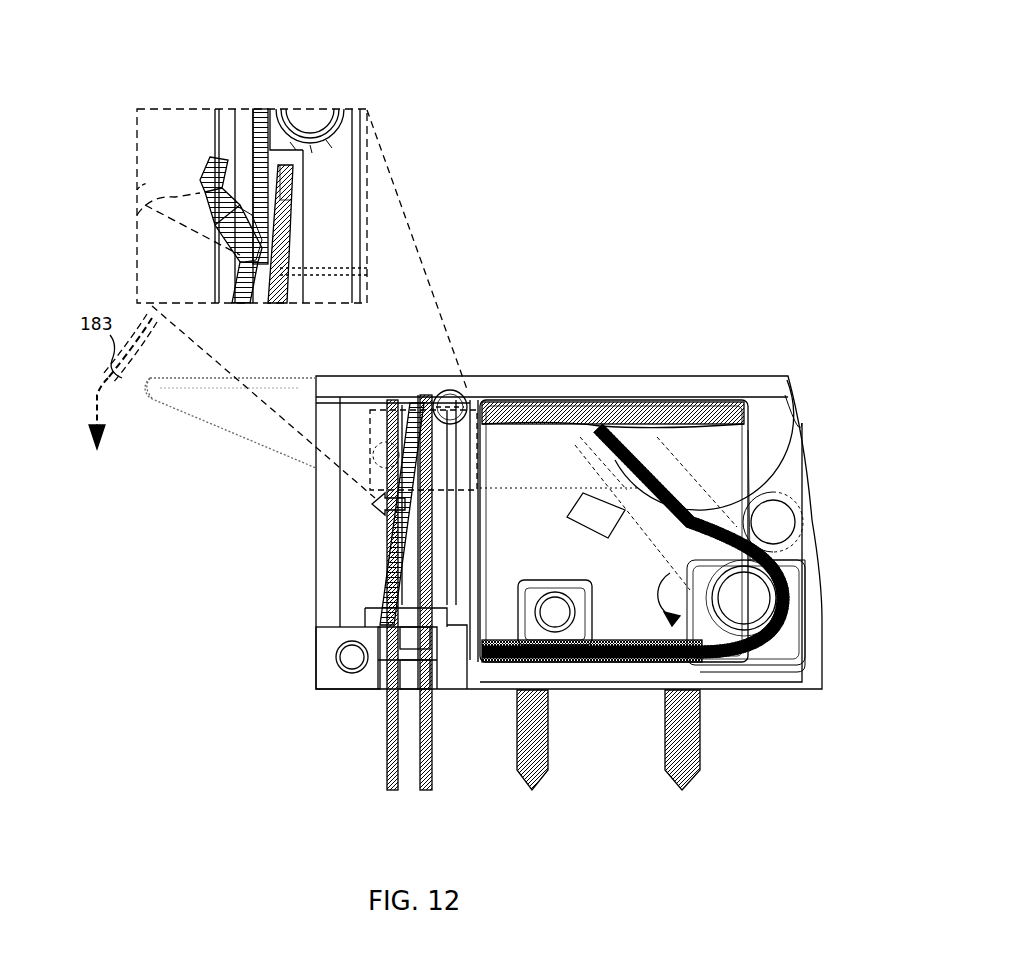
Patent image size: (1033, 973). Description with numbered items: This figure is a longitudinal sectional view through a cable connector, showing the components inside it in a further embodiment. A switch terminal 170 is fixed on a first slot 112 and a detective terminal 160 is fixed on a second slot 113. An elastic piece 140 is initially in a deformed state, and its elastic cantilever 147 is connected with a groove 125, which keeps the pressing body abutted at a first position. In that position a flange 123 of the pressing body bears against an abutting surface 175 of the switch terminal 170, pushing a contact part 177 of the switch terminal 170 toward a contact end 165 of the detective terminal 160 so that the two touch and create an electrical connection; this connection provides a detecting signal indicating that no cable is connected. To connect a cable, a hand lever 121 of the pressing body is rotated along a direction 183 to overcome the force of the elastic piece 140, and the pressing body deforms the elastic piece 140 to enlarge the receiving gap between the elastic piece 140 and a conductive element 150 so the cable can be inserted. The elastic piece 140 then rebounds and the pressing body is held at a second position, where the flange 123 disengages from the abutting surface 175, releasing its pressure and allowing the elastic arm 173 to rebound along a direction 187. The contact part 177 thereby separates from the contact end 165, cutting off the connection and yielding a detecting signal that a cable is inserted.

The first slot 112 is at (386, 670).
The second slot 113 is at (432, 655).
The hand lever 121 is at (240, 415).
The flange 123 is at (175, 213).
The groove 125 is at (659, 411).
The elastic piece 140 is at (763, 450).
The elastic cantilever 147 is at (643, 447).
The conductive element 150 is at (563, 425).
The detective terminal 160 is at (432, 735).
The contact end 165 is at (290, 210).
The switch terminal 170 is at (392, 738).
The elastic arm 173 is at (400, 556).
The abutting surface 175 is at (205, 162).
The contact part 177 is at (262, 210).
The direction 183 is at (662, 645).
The direction 187 is at (372, 505).